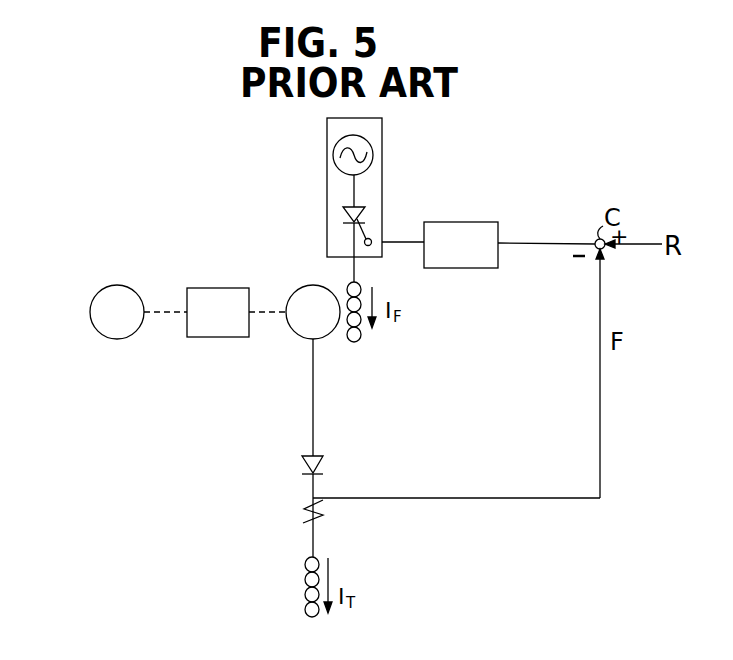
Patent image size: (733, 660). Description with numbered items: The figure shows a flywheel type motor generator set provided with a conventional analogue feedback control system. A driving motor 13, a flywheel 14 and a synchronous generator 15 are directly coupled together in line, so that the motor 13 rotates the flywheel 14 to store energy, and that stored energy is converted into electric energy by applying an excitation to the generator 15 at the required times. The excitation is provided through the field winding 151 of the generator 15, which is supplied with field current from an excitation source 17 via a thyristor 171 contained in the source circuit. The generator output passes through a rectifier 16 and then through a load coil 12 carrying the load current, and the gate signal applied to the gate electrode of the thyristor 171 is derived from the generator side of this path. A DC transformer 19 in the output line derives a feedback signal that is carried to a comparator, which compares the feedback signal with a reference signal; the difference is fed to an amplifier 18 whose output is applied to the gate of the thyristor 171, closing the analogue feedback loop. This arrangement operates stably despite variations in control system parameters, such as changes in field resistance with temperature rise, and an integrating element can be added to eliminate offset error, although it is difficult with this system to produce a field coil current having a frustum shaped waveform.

The coil 12 is at (305, 592).
The driving motor 13 is at (105, 289).
The flywheel 14 is at (220, 288).
The synchronous generator 15 is at (301, 288).
The field winding 151 is at (350, 342).
The rectifier 16 is at (303, 465).
The excitation source 17 is at (382, 131).
The thyristor 171 is at (357, 219).
The amplifier 18 is at (484, 222).
The DC transformer 19 is at (303, 516).